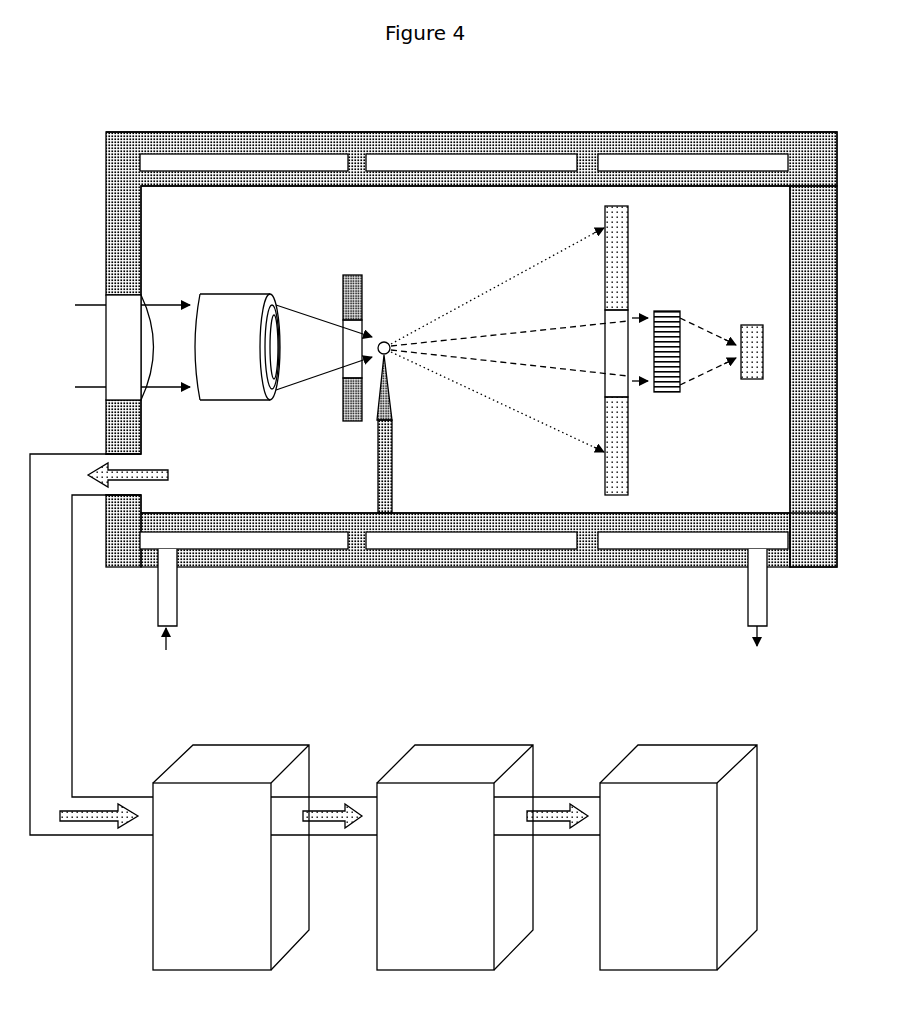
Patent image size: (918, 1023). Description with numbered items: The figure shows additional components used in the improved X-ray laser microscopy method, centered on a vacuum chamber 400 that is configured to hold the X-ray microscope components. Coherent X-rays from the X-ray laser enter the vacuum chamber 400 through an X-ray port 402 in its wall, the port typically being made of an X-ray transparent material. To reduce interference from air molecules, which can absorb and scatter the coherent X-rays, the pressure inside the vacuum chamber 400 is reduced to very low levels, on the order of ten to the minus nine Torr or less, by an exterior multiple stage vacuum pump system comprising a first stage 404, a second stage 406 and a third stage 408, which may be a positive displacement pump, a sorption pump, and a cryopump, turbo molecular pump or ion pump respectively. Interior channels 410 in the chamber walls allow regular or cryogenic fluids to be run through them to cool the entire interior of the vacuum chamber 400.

The vacuum chamber 400 is at (242, 125).
The X-ray port 402 is at (100, 355).
The first stage vacuum pump 404 is at (215, 738).
The second stage vacuum pump 406 is at (437, 738).
The third stage vacuum pump 408 is at (670, 738).
The interior channels 410 is at (168, 593).